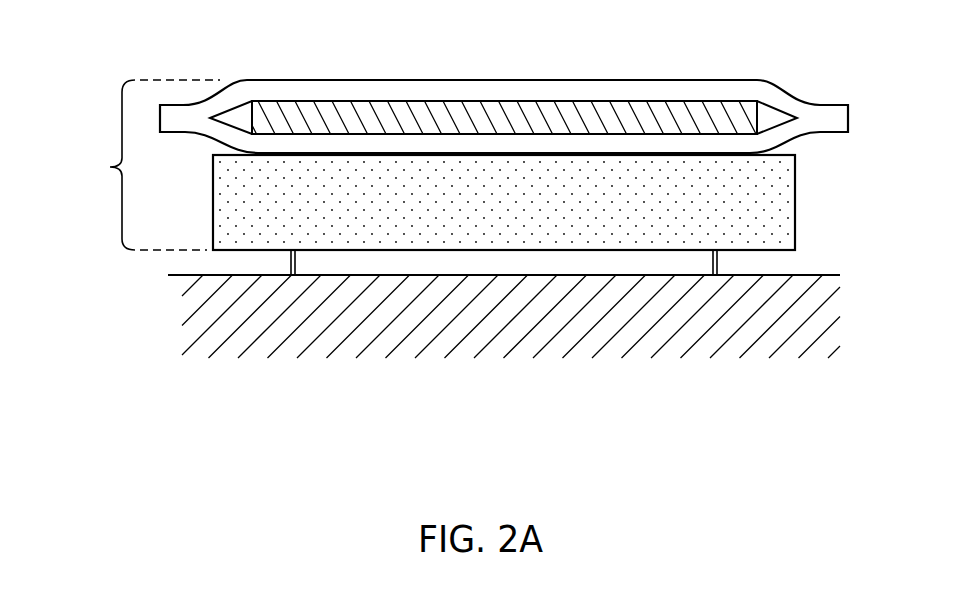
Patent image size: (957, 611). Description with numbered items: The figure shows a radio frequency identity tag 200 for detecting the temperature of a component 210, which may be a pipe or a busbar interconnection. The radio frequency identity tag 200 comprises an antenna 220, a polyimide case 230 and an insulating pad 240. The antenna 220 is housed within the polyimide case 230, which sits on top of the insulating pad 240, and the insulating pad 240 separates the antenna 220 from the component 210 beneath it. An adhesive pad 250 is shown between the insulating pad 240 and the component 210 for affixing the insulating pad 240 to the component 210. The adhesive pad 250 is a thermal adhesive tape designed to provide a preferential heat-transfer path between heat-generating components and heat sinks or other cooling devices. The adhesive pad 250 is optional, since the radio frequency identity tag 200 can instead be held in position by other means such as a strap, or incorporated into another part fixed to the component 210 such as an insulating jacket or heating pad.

The radio frequency identity tag 200 is at (107, 178).
The component 210 is at (238, 317).
The antenna 220 is at (727, 117).
The polyimide case 230 is at (633, 92).
The insulating pad 240 is at (760, 202).
The adhesive pad 250 is at (697, 265).